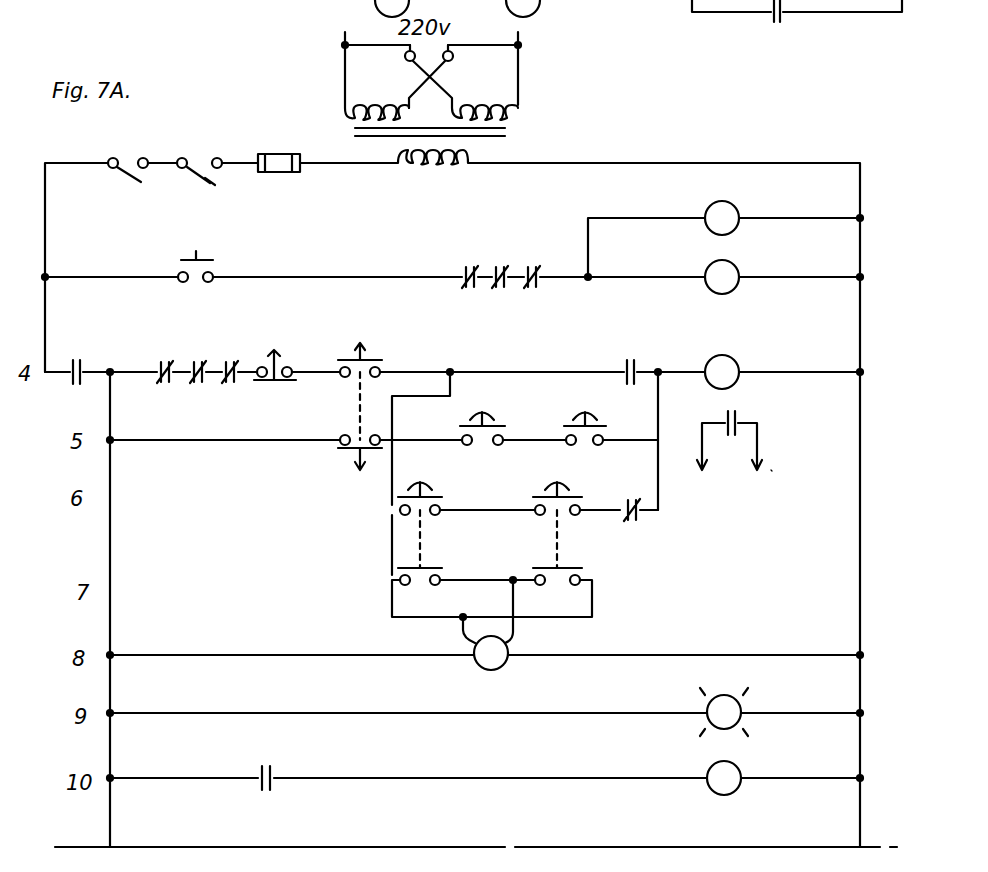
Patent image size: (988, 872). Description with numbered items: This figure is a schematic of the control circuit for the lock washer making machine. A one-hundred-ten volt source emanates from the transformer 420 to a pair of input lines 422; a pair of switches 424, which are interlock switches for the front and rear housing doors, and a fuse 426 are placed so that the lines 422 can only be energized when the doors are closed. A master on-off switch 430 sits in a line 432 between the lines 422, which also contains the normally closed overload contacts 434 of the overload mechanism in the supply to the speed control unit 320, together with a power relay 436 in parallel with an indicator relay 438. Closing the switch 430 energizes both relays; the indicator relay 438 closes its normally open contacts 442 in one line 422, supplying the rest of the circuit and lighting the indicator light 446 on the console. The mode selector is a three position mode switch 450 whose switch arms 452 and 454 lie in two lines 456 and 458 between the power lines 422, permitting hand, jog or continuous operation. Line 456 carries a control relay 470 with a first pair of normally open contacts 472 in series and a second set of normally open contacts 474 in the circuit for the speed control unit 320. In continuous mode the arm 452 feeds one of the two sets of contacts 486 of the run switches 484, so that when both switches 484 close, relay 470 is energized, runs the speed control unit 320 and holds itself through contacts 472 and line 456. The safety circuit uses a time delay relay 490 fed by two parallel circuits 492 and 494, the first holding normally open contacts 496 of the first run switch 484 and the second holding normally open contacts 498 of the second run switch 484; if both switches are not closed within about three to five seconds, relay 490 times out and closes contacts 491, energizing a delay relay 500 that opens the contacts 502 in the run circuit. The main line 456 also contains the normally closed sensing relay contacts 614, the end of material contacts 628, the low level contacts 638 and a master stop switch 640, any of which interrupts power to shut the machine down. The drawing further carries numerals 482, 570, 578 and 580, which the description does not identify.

The speed control unit 320 is at (782, 473).
The transformer 420 is at (311, 84).
The input lines 422 is at (45, 200).
The switches 424 is at (140, 183).
The fuse 426 is at (280, 152).
The master on-off switch 430 is at (184, 260).
The line 432 is at (268, 277).
The overload contacts 434 is at (530, 260).
The power relay 436 is at (708, 210).
The indicator relay 438 is at (732, 290).
The normally open contacts 442 is at (77, 355).
The indicator light 446 is at (710, 705).
The mode switch 450 is at (352, 326).
The switch arm 452 is at (372, 353).
The switch arm 454 is at (340, 450).
The line 456 is at (140, 380).
The line 458 is at (150, 448).
The control relay 470 is at (712, 362).
The normally open contacts 472 is at (628, 360).
The normally open contacts 474 is at (743, 418).
The limit switch contacts 482 is at (572, 418).
The run switches 484 is at (552, 482).
The contacts 486 is at (535, 515).
The time delay relay 490 is at (480, 652).
The normally open contacts 491 is at (260, 768).
The circuit 492 is at (392, 588).
The circuit 494 is at (594, 598).
The normally open contacts 496 is at (402, 576).
The normally open contacts 498 is at (582, 578).
The delay relay 500 is at (712, 770).
The contacts 502 is at (645, 514).
The relay coil 570 is at (593, 8).
The relay contact 578 is at (838, 22).
The relay coil 580 is at (493, 8).
The normally closed contacts 614 is at (168, 360).
The normally closed contacts 628 is at (200, 360).
The normally closed contacts 638 is at (232, 385).
The master stop switch 640 is at (274, 352).